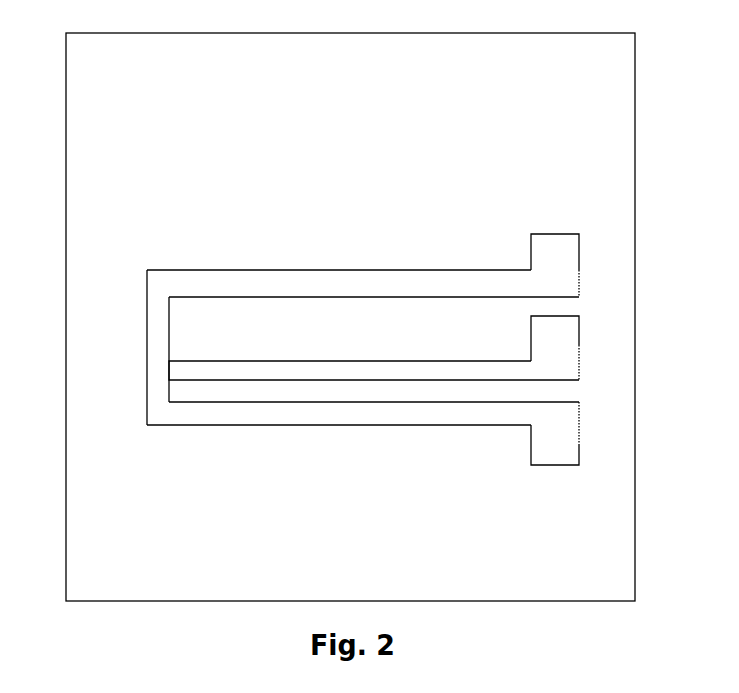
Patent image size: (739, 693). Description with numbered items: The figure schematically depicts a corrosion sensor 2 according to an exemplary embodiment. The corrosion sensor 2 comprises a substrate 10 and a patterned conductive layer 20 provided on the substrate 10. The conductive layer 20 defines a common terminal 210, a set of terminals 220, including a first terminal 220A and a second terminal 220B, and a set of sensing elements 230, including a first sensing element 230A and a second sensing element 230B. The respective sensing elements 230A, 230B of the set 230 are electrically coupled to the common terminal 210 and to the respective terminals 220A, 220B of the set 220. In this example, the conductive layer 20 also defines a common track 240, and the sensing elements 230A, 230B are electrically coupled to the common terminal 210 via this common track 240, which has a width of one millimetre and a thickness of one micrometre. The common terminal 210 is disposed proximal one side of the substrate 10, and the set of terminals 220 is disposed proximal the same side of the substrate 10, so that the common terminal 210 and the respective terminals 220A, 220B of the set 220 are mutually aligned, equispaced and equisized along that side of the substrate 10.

The corrosion sensor 2 is at (681, 351).
The substrate 10 is at (66, 601).
The patterned conductive layer 20 is at (417, 439).
The common terminal 210 is at (579, 465).
The set of terminals 220 is at (587, 309).
The first terminal 220A is at (579, 379).
The second terminal 220B is at (579, 234).
The set of sensing elements 230 is at (376, 262).
The first sensing element 230A is at (303, 328).
The second sensing element 230B is at (380, 330).
The common track 240 is at (285, 424).